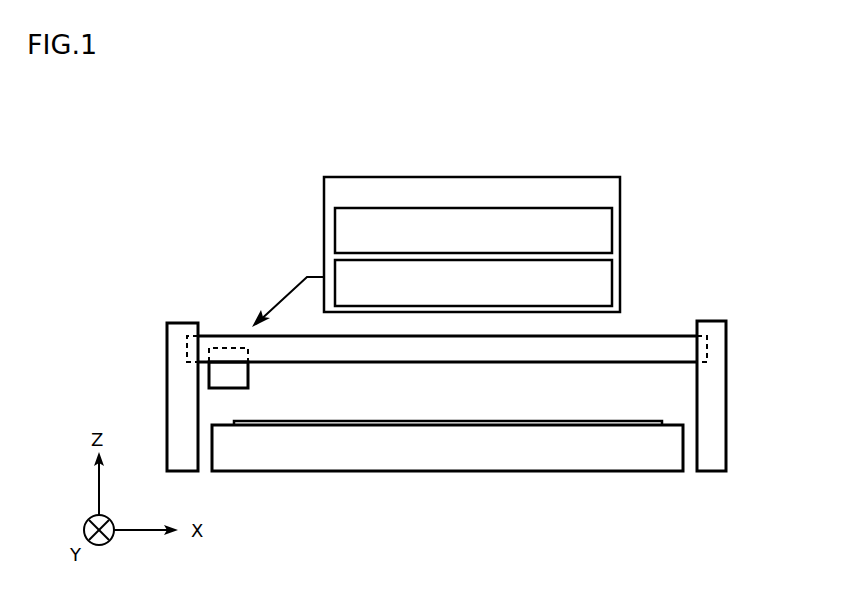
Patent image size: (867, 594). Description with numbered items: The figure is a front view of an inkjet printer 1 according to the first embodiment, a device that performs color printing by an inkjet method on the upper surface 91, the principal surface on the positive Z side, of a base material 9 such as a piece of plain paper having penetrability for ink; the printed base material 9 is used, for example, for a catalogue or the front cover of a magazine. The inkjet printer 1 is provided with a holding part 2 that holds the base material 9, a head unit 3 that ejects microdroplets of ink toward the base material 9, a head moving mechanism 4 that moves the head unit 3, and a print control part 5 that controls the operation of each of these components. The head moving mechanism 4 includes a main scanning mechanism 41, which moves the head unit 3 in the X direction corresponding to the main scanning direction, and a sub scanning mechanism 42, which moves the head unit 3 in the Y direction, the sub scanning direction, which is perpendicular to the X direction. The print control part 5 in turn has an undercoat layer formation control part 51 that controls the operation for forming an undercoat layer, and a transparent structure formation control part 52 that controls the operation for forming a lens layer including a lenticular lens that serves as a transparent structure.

The inkjet printer 1 is at (186, 227).
The holding part 2 is at (415, 471).
The head unit 3 is at (250, 376).
The head moving mechanism 4 is at (495, 360).
The main scanning mechanism 41 is at (651, 334).
The sub scanning mechanism 42 is at (726, 396).
The print control part 5 is at (461, 251).
The undercoat layer formation control part 51 is at (612, 238).
The transparent structure formation control part 52 is at (612, 272).
The base material 9 is at (448, 399).
The upper surface 91 is at (518, 421).